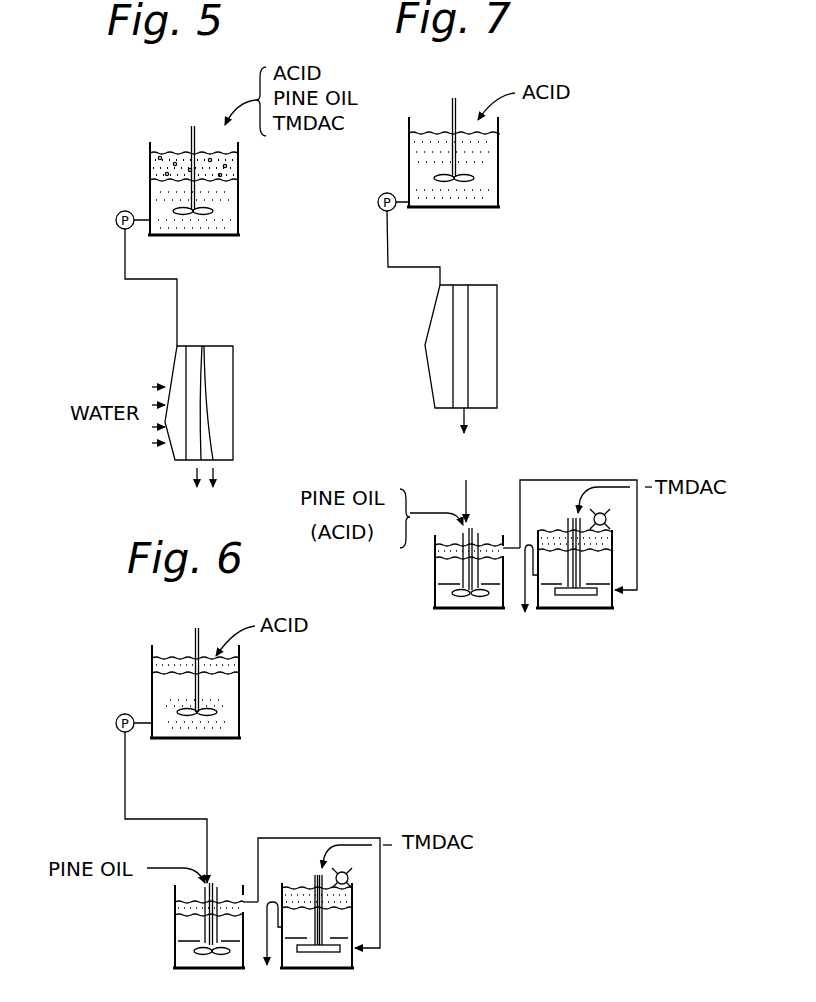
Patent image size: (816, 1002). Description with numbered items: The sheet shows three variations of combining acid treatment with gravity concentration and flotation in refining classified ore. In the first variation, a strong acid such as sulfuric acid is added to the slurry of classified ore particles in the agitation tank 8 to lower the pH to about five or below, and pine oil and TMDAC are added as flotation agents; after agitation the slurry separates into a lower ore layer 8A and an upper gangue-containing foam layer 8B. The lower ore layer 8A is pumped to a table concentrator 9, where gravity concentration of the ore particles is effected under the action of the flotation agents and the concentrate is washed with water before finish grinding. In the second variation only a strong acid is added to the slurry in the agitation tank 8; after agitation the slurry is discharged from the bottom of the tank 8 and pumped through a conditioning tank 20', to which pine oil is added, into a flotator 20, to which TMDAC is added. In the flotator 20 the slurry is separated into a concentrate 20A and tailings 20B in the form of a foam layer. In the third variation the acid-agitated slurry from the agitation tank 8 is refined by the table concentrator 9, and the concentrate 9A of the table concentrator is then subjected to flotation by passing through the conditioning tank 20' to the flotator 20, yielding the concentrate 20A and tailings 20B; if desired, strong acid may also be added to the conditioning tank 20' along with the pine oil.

In FIG. 5, the agitation tank 8 is at (196, 180).
In FIG. 6, the agitation tank 8 is at (150, 687).
In FIG. 5, the lower ore layer 8A is at (222, 206).
In FIG. 5, the upper gangue-containing foam layer 8B is at (238, 163).
In FIG. 5, the table concentrator 9 is at (232, 339).
In FIG. 7, the table concentrator 9 is at (500, 343).
In FIG. 7, the concentrate 9A is at (470, 465).
In FIG. 7, the flotator 20 is at (618, 593).
In FIG. 6, the flotator 20 is at (366, 934).
In FIG. 7, the conditioning tank 20' is at (476, 602).
In FIG. 6, the conditioning tank 20' is at (180, 925).
In FIG. 7, the concentrate 20A is at (531, 593).
In FIG. 6, the concentrate 20A is at (266, 951).
In FIG. 7, the tailings 20B is at (618, 536).
In FIG. 6, the tailings 20B is at (353, 897).